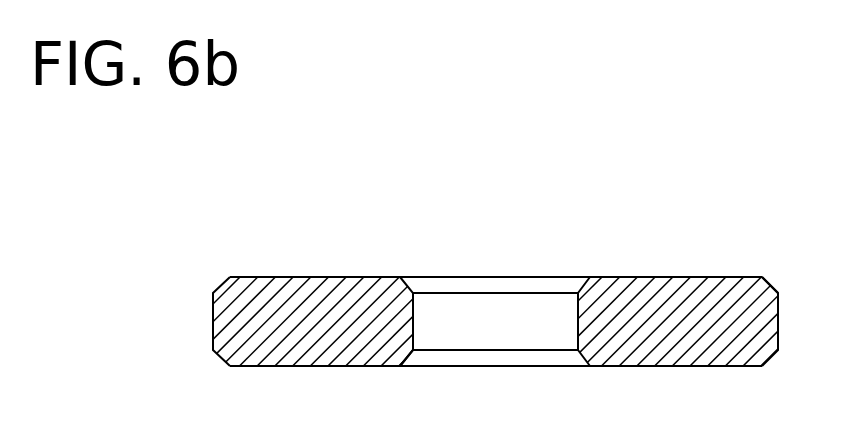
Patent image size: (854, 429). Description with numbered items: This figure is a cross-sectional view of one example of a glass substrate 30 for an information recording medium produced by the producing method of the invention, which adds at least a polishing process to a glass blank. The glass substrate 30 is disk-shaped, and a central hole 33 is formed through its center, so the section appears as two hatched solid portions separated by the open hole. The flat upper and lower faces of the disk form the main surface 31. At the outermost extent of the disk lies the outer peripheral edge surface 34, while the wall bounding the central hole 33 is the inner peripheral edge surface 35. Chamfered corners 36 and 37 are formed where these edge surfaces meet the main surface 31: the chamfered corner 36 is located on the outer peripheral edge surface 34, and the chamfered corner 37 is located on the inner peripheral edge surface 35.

The glass substrate for an information recording medium 30 is at (278, 230).
The main surface 31 is at (670, 277).
The central hole 33 is at (550, 308).
The outer peripheral edge surface 34 is at (213, 321).
The inner peripheral edge surface 35 is at (414, 319).
The chamfered corner 36 is at (774, 289).
The chamfered corner 37 is at (409, 366).